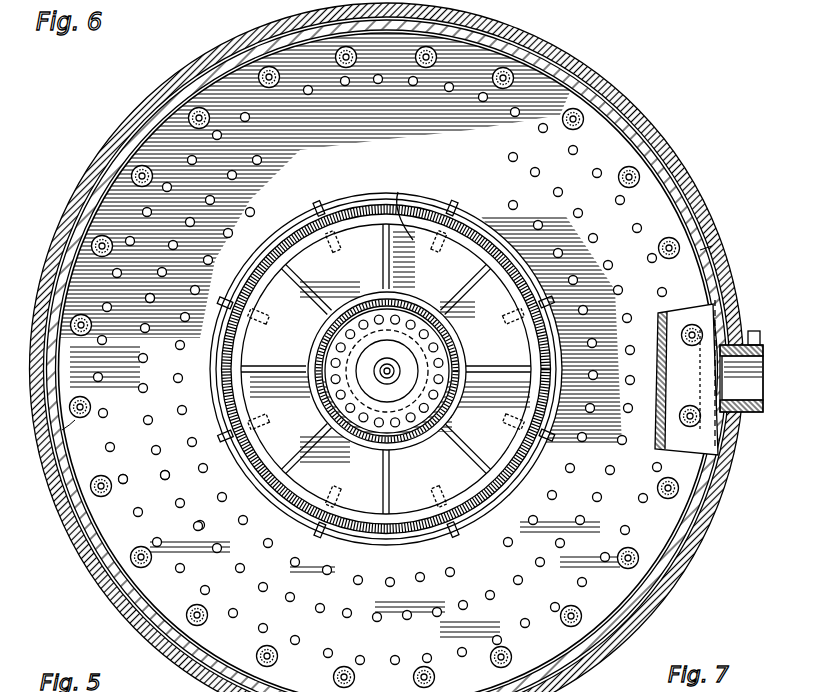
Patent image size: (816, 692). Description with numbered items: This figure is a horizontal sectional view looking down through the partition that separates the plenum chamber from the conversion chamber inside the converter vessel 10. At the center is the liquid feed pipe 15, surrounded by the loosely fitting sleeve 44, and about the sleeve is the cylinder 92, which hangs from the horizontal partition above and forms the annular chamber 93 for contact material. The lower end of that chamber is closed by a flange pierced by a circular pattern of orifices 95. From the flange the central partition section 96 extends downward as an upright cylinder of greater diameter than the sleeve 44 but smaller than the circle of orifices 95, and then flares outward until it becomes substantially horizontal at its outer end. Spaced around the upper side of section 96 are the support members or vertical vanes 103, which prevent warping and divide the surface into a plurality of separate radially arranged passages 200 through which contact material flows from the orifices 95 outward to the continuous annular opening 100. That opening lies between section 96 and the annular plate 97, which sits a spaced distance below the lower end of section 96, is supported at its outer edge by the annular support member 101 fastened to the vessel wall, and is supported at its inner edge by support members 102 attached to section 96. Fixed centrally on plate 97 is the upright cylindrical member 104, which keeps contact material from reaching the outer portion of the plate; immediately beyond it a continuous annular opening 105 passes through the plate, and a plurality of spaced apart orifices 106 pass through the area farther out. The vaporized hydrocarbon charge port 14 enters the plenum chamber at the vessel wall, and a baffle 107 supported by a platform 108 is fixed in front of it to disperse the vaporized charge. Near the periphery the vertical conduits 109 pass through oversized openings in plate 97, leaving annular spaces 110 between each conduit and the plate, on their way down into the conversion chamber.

The vessel 10 is at (78, 218).
The vaporized hydrocarbon charge port 14 is at (760, 412).
The liquid feed pipe 15 is at (403, 379).
The sleeve 44 is at (365, 405).
The cylinder 92 is at (458, 357).
The annular chamber 93 is at (449, 333).
The orifices 95 is at (447, 316).
The central partition section 96 is at (300, 209).
The annular plate partition section 97 is at (136, 298).
The annular opening 100 is at (238, 359).
The annular support member 101 is at (704, 252).
The support members 102 is at (318, 202).
The support members or vertical vanes 103 is at (468, 458).
The upright cylindrical member 104 is at (252, 462).
The continuous annular opening 105 is at (272, 374).
The orifices 106 is at (160, 475).
The baffle 107 is at (670, 328).
The platform 108 is at (708, 343).
The conduits 109 is at (62, 430).
The annular spaces 110 is at (80, 418).
The radially arranged passages 200 is at (414, 206).